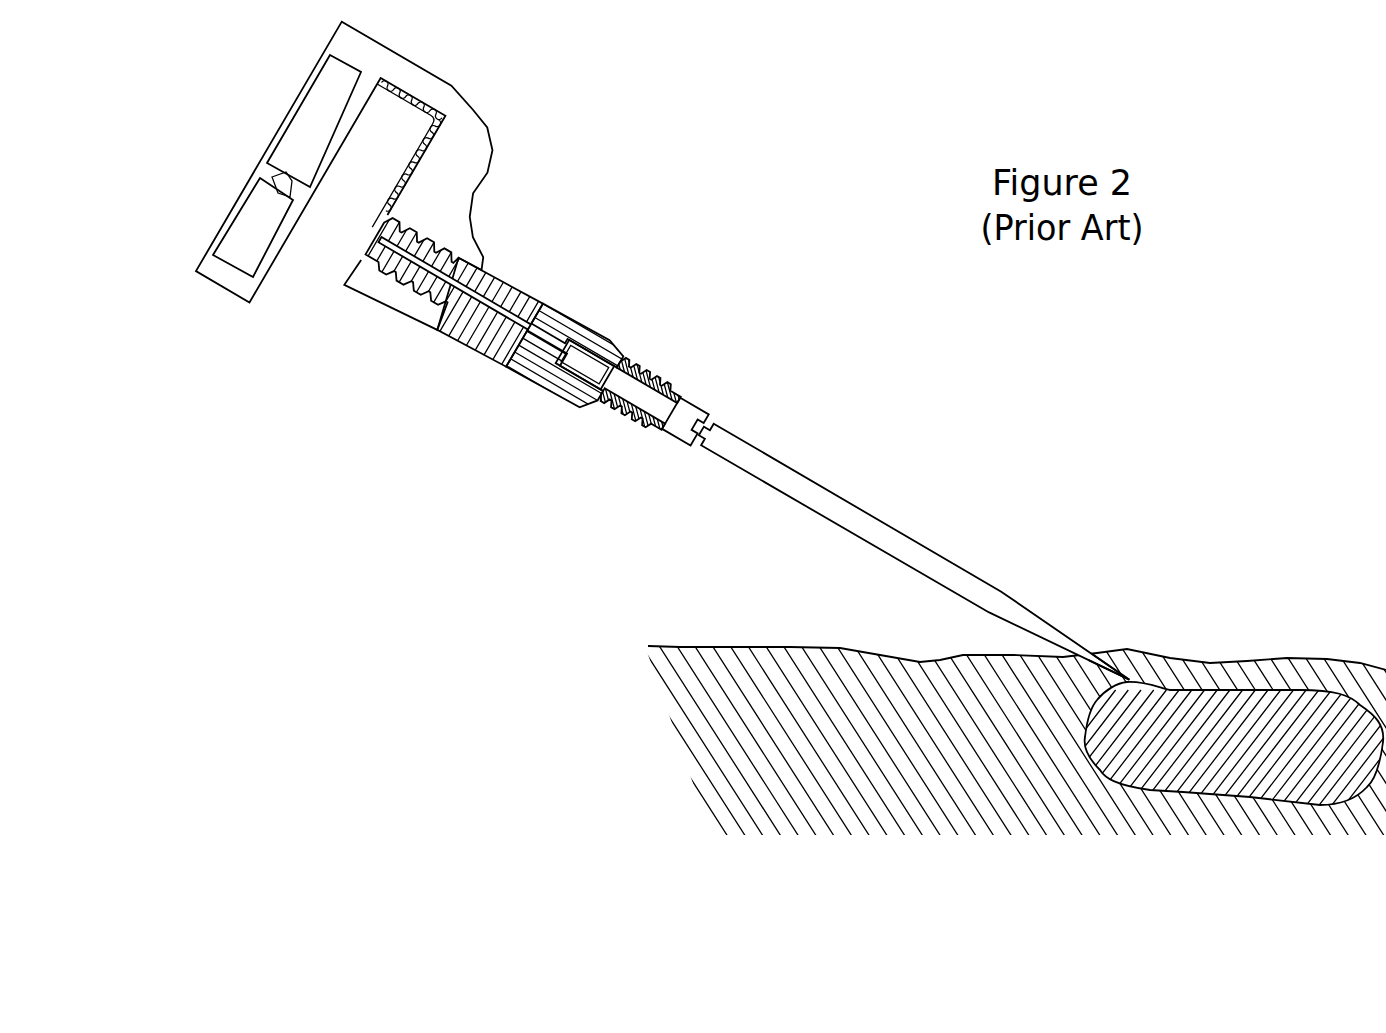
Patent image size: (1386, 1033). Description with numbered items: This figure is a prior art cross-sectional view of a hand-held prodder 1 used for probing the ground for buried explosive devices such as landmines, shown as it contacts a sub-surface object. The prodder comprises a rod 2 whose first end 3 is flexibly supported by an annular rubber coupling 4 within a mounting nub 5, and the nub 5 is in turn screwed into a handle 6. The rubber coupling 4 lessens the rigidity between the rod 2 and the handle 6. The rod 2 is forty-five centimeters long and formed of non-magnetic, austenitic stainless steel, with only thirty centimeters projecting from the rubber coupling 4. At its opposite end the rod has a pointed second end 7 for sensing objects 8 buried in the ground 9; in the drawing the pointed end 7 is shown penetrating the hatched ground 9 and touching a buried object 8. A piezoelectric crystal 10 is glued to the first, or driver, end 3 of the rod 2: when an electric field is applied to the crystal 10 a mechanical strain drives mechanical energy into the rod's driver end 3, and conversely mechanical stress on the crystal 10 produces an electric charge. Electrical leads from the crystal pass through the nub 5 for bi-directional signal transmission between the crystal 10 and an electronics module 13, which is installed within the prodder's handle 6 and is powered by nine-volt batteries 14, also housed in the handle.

The prodder 1 is at (638, 357).
The rod 2 is at (857, 505).
The first end 3 is at (695, 407).
The annular rubber coupling 4 is at (663, 380).
The mounting nub 5 is at (587, 317).
The handle 6 is at (492, 148).
The pointed second end 7 is at (1066, 632).
The object 8 is at (1305, 687).
The ground 9 is at (742, 645).
The piezoelectric crystal 10 is at (568, 395).
The electronics module 13 is at (291, 116).
The batteries 14 is at (217, 240).